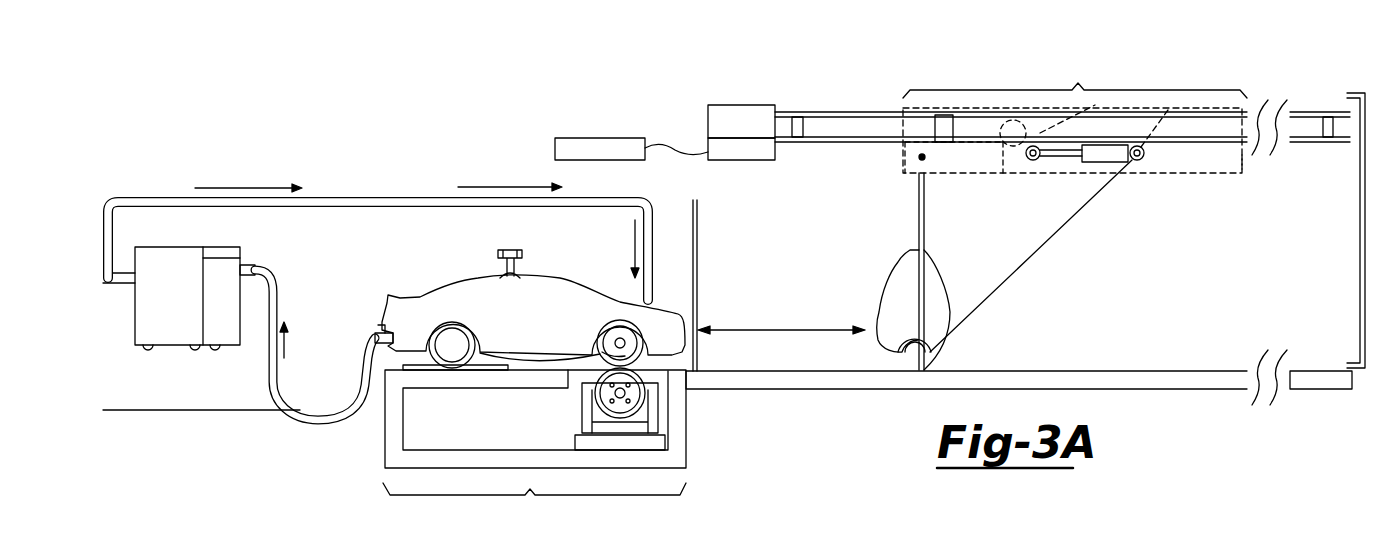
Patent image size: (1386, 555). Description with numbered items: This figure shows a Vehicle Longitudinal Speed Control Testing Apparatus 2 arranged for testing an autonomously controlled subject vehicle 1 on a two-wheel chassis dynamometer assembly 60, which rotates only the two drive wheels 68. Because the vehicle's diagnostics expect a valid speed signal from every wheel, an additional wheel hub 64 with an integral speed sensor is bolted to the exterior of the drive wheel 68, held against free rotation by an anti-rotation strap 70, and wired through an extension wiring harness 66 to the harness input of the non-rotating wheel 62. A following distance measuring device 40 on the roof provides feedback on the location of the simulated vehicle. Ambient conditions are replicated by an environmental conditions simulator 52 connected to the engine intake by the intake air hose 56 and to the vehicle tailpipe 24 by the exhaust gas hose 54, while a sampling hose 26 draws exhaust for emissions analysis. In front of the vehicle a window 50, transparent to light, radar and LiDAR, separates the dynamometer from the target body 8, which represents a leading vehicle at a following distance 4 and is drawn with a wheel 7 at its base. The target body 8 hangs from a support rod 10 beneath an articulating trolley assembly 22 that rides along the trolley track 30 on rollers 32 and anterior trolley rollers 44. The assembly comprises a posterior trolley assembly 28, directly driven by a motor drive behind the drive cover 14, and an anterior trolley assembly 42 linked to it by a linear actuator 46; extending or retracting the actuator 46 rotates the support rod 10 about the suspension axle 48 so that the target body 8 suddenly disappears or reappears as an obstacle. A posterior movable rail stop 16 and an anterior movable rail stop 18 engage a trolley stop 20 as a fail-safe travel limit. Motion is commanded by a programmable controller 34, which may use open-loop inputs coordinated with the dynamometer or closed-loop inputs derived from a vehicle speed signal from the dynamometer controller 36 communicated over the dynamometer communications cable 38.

The test vehicle 1 is at (660, 305).
The Vehicle Longitudinal Speed Control Testing Apparatus 2 is at (1132, 406).
The following distance 4 is at (785, 328).
The target wheel 7 is at (930, 345).
The target body 8 is at (903, 272).
The support rod 10 is at (926, 240).
The drive cover 14 is at (745, 118).
The posterior movable rail stop 16 is at (805, 110).
The anterior movable rail stop 18 is at (1320, 112).
The trolley stop 20 is at (953, 140).
The articulating trolley assembly 22 is at (1075, 114).
The vehicle tailpipe 24 is at (380, 327).
The sampling hose 26 is at (178, 410).
The posterior trolley assembly 28 is at (975, 175).
The trolley track 30 is at (878, 110).
The roller 32 is at (1013, 146).
The programmable controller 34 is at (752, 150).
The dynamometer controller 36 is at (600, 138).
The dynamometer communications cable 38 is at (678, 148).
The following distance measuring device 40 is at (515, 250).
The anterior trolley assembly 42 is at (1200, 160).
The anterior trolley roller 44 is at (1242, 173).
The linear actuator 46 is at (1090, 163).
The suspension axle 48 is at (920, 158).
The window 50 is at (698, 228).
The environmental conditions simulator 52 is at (135, 308).
The exhaust gas hose 54 is at (352, 350).
The intake air hose 56 is at (378, 197).
The two-wheel chassis dynamometer assembly 60 is at (534, 450).
The non-rotating wheel 62 is at (452, 345).
The additional wheel hub 64 is at (622, 335).
The extension wiring harness 66 is at (532, 366).
The drive wheel 68 is at (615, 343).
The anti-rotation strap 70 is at (605, 352).